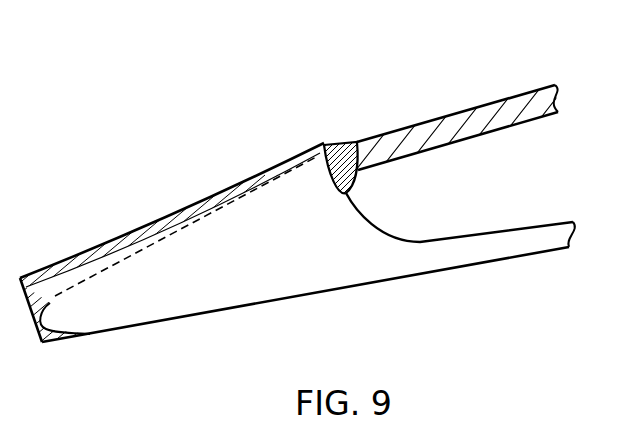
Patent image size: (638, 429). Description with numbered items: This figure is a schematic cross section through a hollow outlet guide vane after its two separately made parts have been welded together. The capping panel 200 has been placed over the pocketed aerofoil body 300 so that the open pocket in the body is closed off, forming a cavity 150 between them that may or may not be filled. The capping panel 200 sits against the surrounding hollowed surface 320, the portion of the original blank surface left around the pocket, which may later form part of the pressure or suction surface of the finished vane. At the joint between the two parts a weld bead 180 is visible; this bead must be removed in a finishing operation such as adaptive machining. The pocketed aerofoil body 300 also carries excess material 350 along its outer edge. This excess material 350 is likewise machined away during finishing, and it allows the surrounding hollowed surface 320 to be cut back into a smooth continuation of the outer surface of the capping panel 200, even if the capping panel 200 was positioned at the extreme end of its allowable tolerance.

The cavity 150 is at (516, 201).
The weld bead 180 is at (352, 135).
The capping panel 200 is at (489, 98).
The pocketed aerofoil body 300 is at (295, 290).
The surrounding hollowed surface 320 is at (236, 187).
The excess material 350 is at (120, 226).